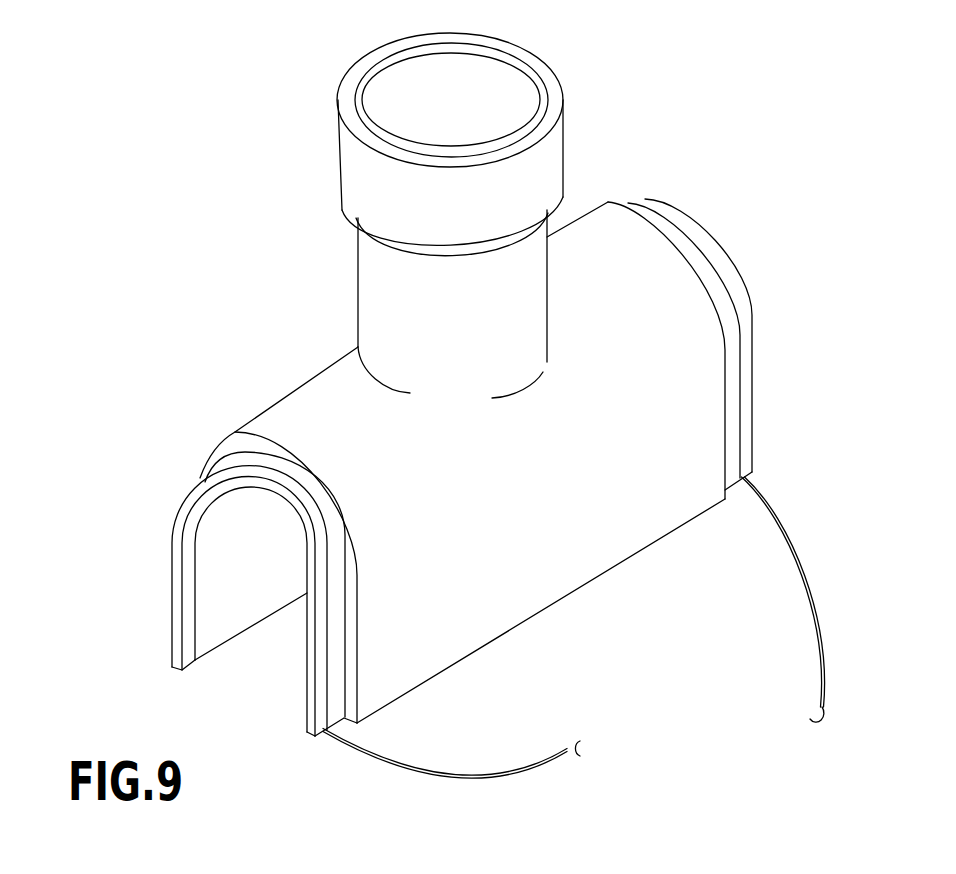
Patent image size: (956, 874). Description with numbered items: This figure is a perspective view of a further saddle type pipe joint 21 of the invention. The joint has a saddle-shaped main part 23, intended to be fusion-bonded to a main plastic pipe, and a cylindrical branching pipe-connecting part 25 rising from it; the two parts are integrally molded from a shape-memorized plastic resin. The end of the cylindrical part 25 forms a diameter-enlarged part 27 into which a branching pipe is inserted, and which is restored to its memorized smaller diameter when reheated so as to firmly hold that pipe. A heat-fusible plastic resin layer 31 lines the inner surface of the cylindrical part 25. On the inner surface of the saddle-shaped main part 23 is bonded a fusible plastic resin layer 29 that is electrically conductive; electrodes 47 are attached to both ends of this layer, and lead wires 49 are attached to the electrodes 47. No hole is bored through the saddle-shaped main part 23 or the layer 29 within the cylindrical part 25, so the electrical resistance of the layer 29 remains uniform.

The saddle type pipe joint 21 is at (296, 270).
The saddle-shaped main part 23 is at (603, 557).
The cylindrical branching pipe-connecting part 25 is at (367, 253).
The diameter-enlarged part 27 is at (552, 168).
The fusible plastic resin layer 29 is at (337, 630).
The heat-fusible plastic resin layer 31 is at (357, 97).
The electrodes 47 is at (745, 413).
The lead wires 49 is at (797, 543).